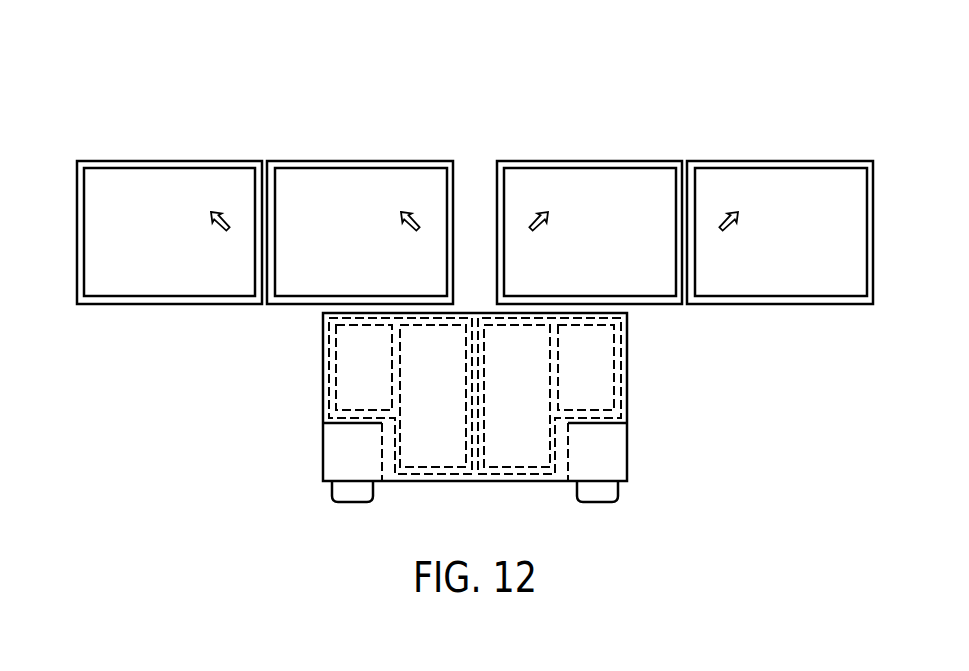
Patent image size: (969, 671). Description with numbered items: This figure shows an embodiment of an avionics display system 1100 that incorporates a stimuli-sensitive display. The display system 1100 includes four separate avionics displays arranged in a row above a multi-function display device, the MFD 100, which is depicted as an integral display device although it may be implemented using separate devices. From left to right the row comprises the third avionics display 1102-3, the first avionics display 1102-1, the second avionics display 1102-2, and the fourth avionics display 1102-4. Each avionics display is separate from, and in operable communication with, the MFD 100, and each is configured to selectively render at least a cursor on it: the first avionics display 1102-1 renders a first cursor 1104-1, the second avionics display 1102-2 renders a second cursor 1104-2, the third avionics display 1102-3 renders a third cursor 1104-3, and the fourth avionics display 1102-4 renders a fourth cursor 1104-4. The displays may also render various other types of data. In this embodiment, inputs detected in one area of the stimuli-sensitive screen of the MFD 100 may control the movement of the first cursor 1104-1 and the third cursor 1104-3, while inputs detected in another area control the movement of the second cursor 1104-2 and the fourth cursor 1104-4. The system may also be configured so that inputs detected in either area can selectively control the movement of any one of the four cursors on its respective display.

The display system 1100 is at (128, 115).
The MFD 100 is at (645, 388).
The first avionics display 1102-1 is at (365, 161).
The second avionics display 1102-2 is at (584, 161).
The third avionics display 1102-3 is at (193, 161).
The fourth avionics display 1102-4 is at (773, 161).
The first cursor 1104-1 is at (403, 219).
The second cursor 1104-2 is at (546, 221).
The third cursor 1104-3 is at (213, 219).
The fourth cursor 1104-4 is at (738, 221).